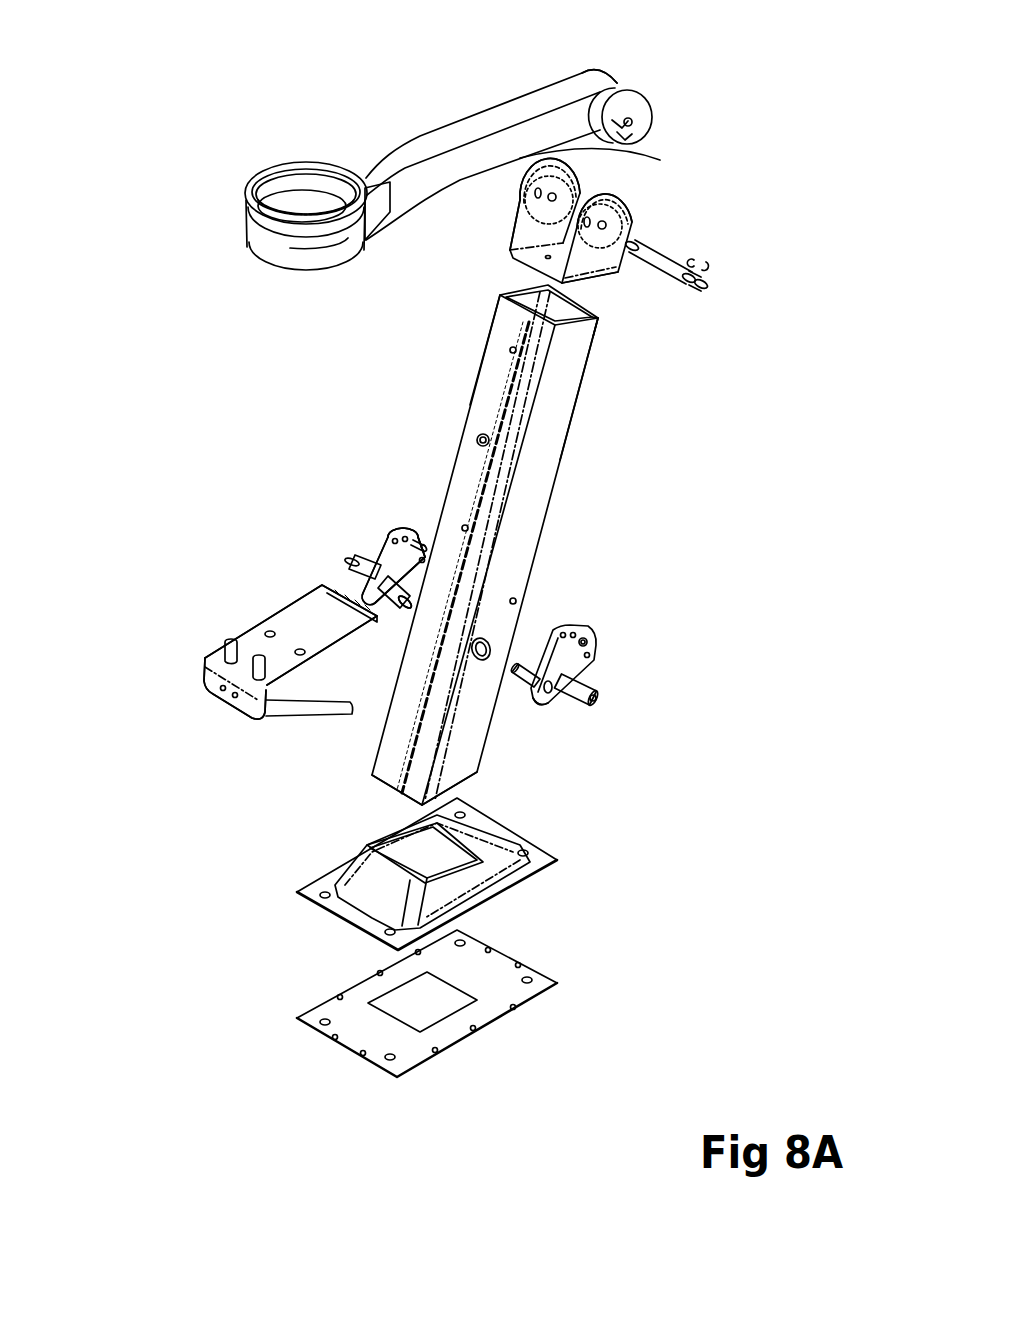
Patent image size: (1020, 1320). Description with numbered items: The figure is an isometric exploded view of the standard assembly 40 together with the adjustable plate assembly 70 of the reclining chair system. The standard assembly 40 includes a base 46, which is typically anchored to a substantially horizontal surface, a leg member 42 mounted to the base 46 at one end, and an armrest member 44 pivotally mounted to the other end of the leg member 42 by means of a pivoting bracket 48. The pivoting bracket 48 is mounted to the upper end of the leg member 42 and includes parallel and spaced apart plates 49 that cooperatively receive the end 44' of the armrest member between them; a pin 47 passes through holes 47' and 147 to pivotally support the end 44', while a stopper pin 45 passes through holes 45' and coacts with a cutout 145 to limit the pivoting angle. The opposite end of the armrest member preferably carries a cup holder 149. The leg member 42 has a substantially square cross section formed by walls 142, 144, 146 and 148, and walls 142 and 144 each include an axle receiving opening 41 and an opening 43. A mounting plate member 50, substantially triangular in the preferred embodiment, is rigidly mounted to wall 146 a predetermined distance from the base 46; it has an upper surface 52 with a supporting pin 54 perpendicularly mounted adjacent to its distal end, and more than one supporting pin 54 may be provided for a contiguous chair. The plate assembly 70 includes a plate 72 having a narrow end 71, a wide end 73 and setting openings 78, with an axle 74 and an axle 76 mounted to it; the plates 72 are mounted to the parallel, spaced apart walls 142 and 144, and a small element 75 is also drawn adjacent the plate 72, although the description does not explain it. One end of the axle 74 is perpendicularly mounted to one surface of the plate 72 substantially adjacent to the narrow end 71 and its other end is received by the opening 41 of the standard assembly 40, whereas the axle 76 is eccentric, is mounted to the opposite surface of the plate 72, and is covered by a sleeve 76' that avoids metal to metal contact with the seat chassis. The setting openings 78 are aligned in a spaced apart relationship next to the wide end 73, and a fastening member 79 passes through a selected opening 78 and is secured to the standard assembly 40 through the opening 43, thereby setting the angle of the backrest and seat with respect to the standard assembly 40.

The standard assembly 40 is at (665, 532).
The axle receiving opening 41 is at (482, 661).
The leg member 42 is at (555, 487).
The opening 43 is at (516, 599).
The armrest member 44 is at (509, 124).
The end 44' is at (636, 45).
The stopper pin 45 is at (698, 304).
The holes 45' is at (523, 205).
The base 46 is at (550, 980).
The pin 47 is at (764, 272).
The holes 47' is at (666, 208).
The pivoting bracket 48 is at (632, 232).
The plates 49 is at (622, 190).
The mounting plate member 50 is at (200, 672).
The upper surface 52 is at (243, 640).
The supporting pin 54 is at (228, 688).
The plate assembly 70 is at (403, 526).
The narrow end 71 is at (383, 594).
The plate 72 is at (400, 528).
The wide end 73 is at (400, 540).
The axle 74 is at (401, 612).
The pin 75 is at (410, 545).
The axle 76 is at (662, 715).
The sleeve 76' is at (471, 598).
The setting openings 78 is at (423, 556).
The fastening member 79 is at (406, 530).
The wall 142 is at (550, 417).
The wall 144 is at (548, 285).
The cutout 145 is at (640, 148).
The wall 146 is at (485, 342).
The hole 147 is at (637, 120).
The wall 148 is at (599, 318).
The cup holder 149 is at (306, 162).